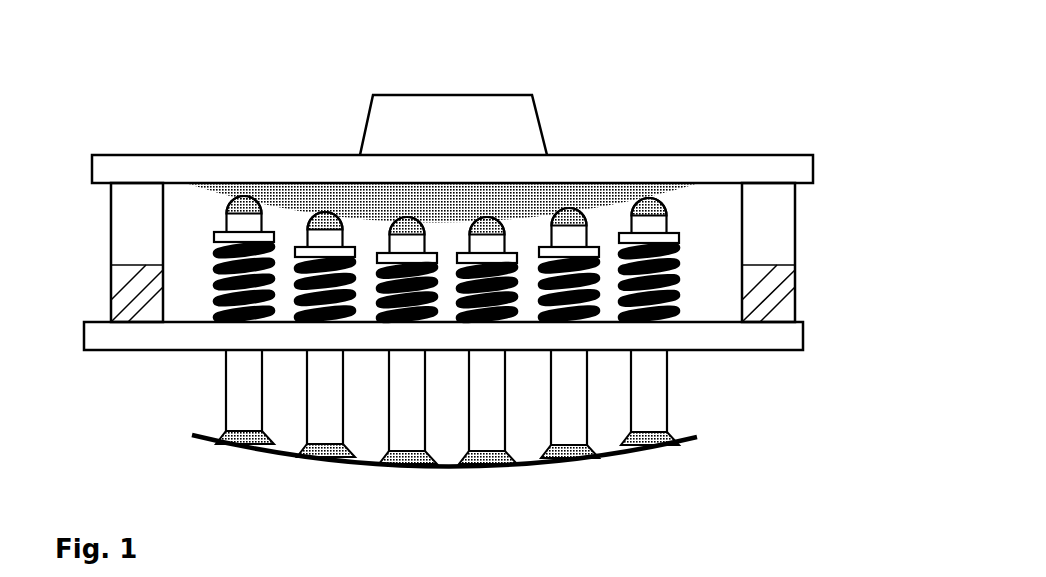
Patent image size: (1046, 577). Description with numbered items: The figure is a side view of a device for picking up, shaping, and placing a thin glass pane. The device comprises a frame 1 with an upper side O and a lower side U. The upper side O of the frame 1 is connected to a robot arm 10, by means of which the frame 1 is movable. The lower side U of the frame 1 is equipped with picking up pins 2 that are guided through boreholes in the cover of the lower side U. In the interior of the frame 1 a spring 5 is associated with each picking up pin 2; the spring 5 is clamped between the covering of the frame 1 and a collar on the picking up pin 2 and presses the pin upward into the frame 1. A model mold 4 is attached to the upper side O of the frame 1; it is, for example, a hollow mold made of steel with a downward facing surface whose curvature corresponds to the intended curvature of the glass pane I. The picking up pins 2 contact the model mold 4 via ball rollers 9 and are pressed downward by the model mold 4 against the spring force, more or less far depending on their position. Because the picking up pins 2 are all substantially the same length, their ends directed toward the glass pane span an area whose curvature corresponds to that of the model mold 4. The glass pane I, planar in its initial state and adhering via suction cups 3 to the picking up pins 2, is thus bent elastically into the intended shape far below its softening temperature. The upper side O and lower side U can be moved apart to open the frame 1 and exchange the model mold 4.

The frame 1 is at (187, 97).
The upper side O is at (165, 170).
The lower side U is at (137, 333).
The robot arm 10 is at (458, 115).
The model mold 4 is at (577, 188).
The ball roller 9 is at (670, 212).
The spring 5 is at (673, 275).
The picking up pin 2 is at (243, 399).
The suction cup 3 is at (668, 428).
The glass pane I is at (695, 437).